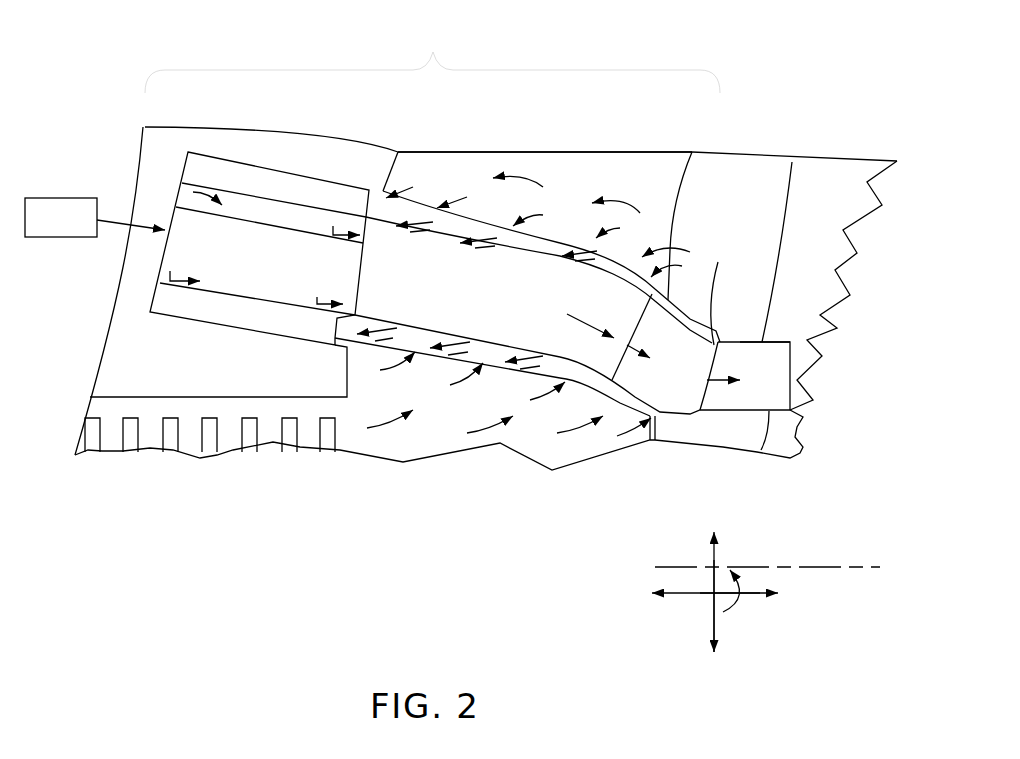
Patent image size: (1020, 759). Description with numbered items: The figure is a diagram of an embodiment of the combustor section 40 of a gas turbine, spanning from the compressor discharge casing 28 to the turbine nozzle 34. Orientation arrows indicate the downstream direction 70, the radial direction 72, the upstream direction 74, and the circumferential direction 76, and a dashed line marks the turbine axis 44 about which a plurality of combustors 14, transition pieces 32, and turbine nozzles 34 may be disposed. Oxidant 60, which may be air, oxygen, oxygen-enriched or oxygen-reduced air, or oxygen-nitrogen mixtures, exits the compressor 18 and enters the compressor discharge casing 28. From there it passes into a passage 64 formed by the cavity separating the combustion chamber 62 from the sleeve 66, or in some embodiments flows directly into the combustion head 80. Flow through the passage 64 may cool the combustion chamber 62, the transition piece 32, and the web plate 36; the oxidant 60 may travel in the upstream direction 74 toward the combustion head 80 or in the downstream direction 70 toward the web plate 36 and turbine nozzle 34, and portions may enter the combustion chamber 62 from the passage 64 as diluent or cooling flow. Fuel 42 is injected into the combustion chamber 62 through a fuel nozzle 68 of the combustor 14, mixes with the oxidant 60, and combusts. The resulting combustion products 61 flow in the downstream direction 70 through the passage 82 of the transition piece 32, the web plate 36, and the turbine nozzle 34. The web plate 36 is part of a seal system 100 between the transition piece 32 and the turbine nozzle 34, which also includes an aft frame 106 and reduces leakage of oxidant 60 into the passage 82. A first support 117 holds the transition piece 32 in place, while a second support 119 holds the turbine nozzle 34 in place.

The combustor section 40 is at (432, 56).
The combustion head 80 is at (173, 193).
The fuel 42 is at (60, 197).
The combustor 14 is at (390, 186).
The sleeve 66 is at (478, 222).
The passage 64 is at (572, 240).
The first support 117 is at (668, 215).
The compressor discharge casing 28 is at (675, 150).
The oxidant 60 is at (615, 183).
The fuel nozzle 68 is at (372, 260).
The combustion chamber 62 is at (500, 307).
The combustion products 61 is at (637, 355).
The transition piece 32 is at (688, 400).
The turbine nozzle 34 is at (774, 394).
The web plate 36 is at (782, 341).
The seal system 100 is at (729, 328).
The aft frame 106 is at (688, 258).
The second support 119 is at (790, 222).
The compressor 18 is at (192, 418).
The passage 82 is at (695, 388).
The turbine axis 44 is at (798, 563).
The radial direction 72 is at (710, 558).
The circumferential direction 76 is at (716, 625).
The upstream direction 74 is at (683, 598).
The downstream direction 70 is at (758, 597).